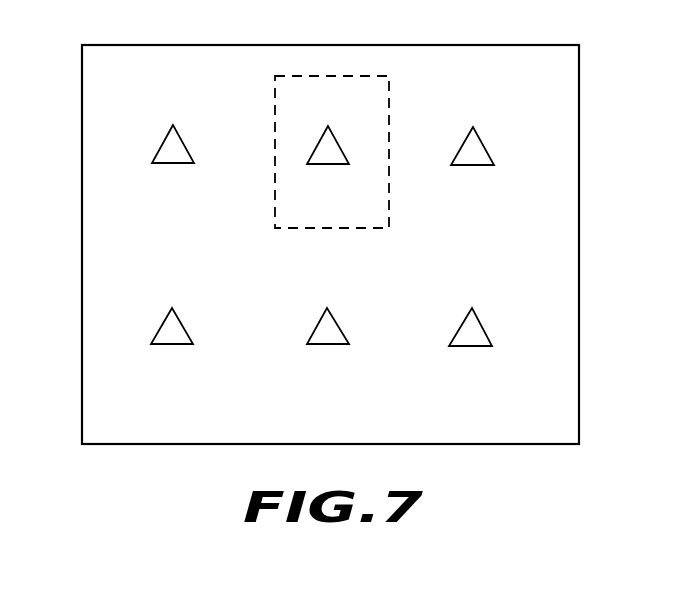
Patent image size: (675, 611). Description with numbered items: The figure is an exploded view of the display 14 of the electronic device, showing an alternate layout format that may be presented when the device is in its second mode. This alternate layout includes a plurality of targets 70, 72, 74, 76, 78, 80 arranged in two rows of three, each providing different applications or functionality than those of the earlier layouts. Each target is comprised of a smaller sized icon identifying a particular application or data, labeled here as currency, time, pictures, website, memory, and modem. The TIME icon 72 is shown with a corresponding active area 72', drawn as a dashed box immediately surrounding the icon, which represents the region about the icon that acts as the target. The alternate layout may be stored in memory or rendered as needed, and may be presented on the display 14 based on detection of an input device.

The display 14 is at (103, 45).
The target 70 is at (178, 134).
The TIME icon 72 is at (342, 158).
The active area 72' is at (354, 143).
The target 74 is at (478, 136).
The target 76 is at (177, 316).
The target 78 is at (332, 316).
The target 80 is at (477, 317).